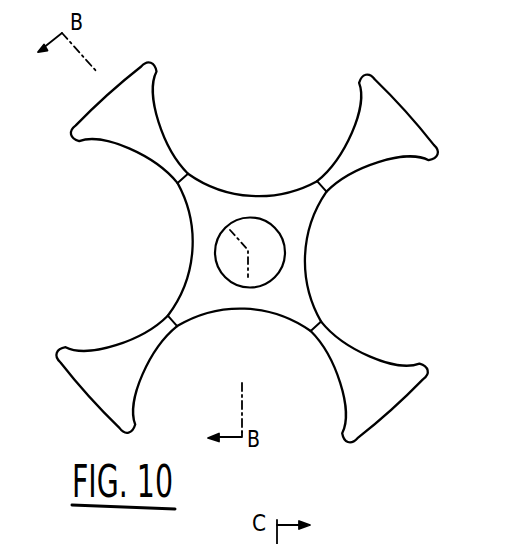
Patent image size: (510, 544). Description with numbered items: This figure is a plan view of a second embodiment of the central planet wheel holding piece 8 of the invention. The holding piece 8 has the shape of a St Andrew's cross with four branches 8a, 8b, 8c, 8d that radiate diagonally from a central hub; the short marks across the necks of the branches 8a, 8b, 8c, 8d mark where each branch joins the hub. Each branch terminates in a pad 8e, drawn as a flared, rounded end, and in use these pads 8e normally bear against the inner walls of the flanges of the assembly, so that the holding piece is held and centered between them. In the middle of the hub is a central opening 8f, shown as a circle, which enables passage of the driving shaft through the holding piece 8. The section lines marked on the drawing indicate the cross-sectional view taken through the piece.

The central planet wheel holding piece 8 is at (258, 194).
The branch 8a is at (178, 166).
The branch 8b is at (336, 175).
The branch 8c is at (327, 334).
The branch 8d is at (166, 325).
The pad 8e is at (134, 77).
The central opening 8f is at (271, 258).